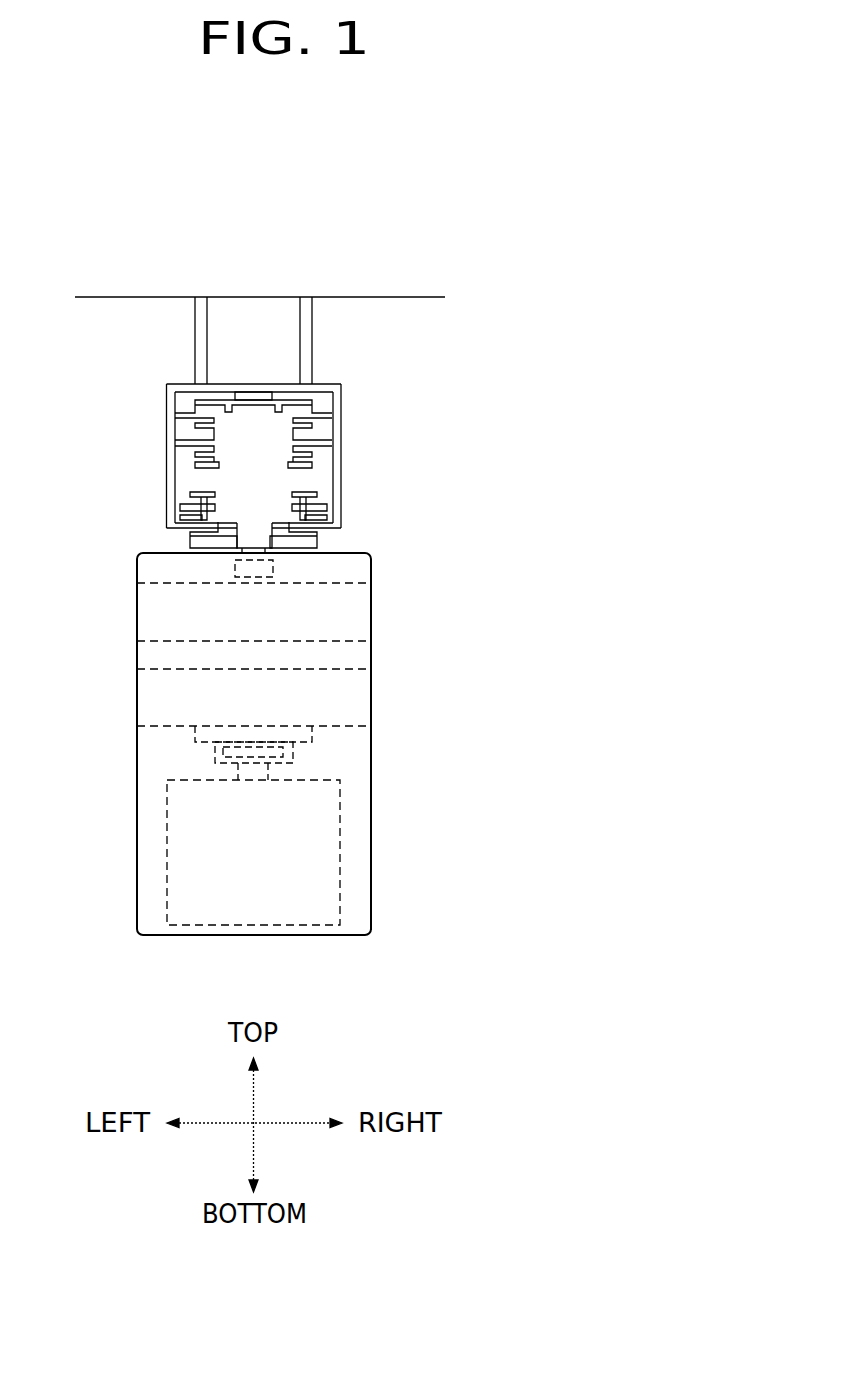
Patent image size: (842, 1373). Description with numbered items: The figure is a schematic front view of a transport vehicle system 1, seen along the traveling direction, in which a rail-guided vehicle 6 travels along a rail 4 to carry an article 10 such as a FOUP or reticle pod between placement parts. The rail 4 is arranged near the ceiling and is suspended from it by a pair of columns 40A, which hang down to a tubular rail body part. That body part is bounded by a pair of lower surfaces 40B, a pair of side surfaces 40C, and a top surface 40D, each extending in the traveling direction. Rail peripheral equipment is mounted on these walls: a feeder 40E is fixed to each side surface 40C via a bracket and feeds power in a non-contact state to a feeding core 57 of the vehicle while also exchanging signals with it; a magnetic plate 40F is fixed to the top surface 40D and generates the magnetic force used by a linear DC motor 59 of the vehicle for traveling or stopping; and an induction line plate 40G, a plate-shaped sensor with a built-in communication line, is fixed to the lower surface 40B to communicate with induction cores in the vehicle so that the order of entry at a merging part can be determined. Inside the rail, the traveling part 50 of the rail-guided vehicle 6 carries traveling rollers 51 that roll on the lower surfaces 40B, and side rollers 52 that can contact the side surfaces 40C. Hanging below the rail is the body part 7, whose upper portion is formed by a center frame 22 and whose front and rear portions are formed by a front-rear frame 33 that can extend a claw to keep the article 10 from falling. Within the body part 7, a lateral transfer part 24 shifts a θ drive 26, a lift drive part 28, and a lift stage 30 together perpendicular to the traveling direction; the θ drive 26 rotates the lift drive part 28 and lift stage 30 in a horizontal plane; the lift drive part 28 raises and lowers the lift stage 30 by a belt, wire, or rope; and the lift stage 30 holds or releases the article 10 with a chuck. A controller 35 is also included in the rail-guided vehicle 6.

The transport vehicle system 1 is at (483, 306).
The rail 4 is at (257, 406).
The rail-guided vehicle 6 is at (305, 686).
The body part 7 is at (377, 628).
The article 10 is at (322, 820).
The center frame 22 is at (165, 567).
The lateral transfer part 24 is at (360, 600).
The θ drive 26 is at (360, 655).
The lift drive part 28 is at (360, 700).
The lift stage 30 is at (312, 737).
The front-rear frame 33 is at (358, 893).
The controller 35 is at (233, 570).
The column 40A is at (195, 337).
The lower surface 40B is at (333, 528).
The side surface 40C is at (343, 488).
The top surface 40D is at (343, 385).
The feeder 40E is at (297, 413).
The magnetic plate 40F is at (258, 392).
The induction line plate 40G is at (195, 535).
The traveling part 50 is at (203, 468).
The traveling roller 51 is at (200, 517).
The side roller 52 is at (180, 506).
The feeding core 57 is at (195, 400).
The linear DC motor 59 is at (248, 392).